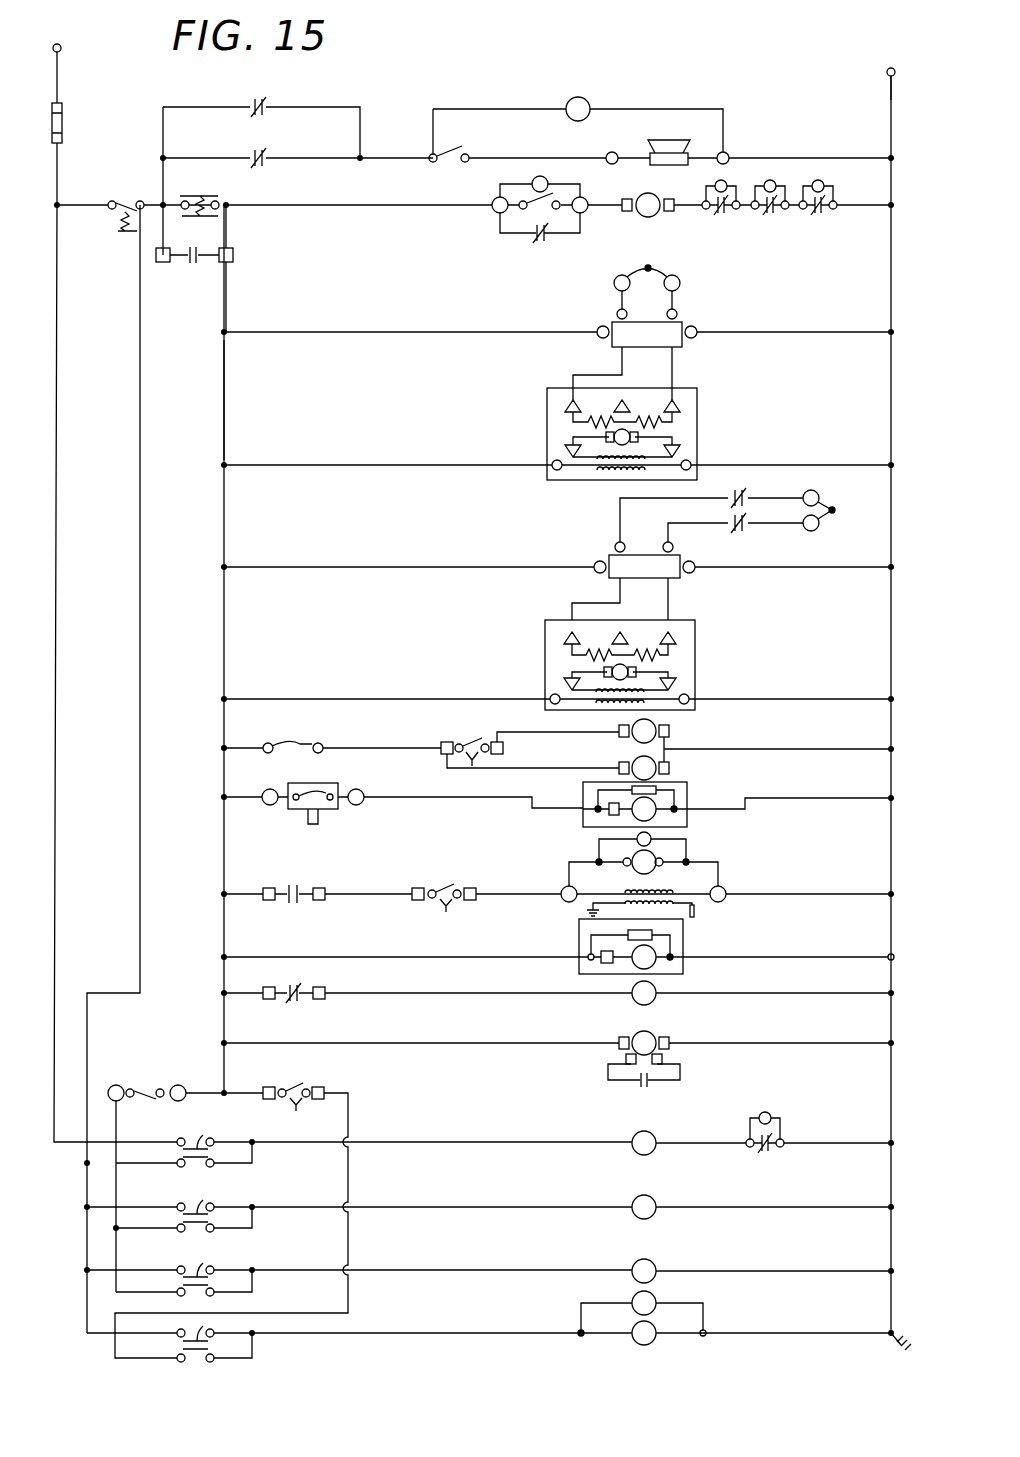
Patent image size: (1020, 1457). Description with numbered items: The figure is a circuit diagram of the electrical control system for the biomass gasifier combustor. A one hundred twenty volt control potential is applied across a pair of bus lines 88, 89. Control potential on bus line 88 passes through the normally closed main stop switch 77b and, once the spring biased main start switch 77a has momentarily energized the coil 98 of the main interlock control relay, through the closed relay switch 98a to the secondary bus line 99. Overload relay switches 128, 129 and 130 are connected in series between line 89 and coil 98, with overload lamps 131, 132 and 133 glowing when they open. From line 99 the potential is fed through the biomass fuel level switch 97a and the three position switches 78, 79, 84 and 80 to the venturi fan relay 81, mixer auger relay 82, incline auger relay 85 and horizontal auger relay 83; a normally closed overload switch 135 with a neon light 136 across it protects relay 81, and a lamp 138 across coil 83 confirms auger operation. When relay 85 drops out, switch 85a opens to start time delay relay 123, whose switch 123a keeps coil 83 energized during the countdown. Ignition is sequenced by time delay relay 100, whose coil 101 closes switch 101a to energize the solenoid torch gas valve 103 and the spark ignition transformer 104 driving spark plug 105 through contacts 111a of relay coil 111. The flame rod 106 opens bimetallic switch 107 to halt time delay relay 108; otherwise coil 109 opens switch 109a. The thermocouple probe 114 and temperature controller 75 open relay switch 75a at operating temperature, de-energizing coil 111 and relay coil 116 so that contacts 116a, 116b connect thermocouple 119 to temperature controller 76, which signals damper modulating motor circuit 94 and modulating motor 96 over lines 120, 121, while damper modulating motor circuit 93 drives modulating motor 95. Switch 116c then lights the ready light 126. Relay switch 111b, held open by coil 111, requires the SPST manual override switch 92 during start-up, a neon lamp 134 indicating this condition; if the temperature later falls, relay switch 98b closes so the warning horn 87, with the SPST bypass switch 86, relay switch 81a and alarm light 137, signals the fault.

The bus line 88 is at (60, 62).
The bus line 89 is at (887, 90).
The relay switch 81a is at (262, 96).
The relay switch 98b is at (262, 147).
The main stop switch 77b is at (125, 203).
The main start switch 77a is at (197, 195).
The relay switch 98a is at (193, 264).
The secondary bus line 99 is at (224, 407).
The SPST bypass switch 86 is at (450, 150).
The alarm light 137 is at (588, 100).
The warning horn 87 is at (668, 140).
The SPST manual override switch 92 is at (545, 200).
The neon lamp 134 is at (536, 178).
The relay switch 111b is at (538, 243).
The coil of main interlock control relay 98 is at (652, 217).
The overload relay switch 128 is at (718, 216).
The overload relay switch 129 is at (768, 216).
The overload relay switch 130 is at (818, 216).
The overload lamp 131 is at (726, 182).
The overload lamp 132 is at (775, 182).
The overload lamp 133 is at (823, 182).
The temperature controller 75 is at (672, 328).
The thermocouple probe 114 is at (644, 268).
The damper modulating motor circuit 93 is at (545, 432).
The modulating motor 95 is at (630, 437).
The temperature controller 76 is at (612, 560).
The relay contact 116a is at (738, 487).
The relay contact 116b is at (738, 534).
The thermocouple 119 is at (835, 510).
The line 120 is at (590, 603).
The line 121 is at (668, 597).
The damper modulating motor circuit 94 is at (695, 665).
The modulating motor 96 is at (612, 670).
The relay switch 75a is at (296, 745).
The relay switch 109a is at (476, 752).
The relay coil 111 is at (650, 722).
The relay coil 116 is at (636, 760).
The bimetallic switch 107 is at (310, 788).
The flame rod 106 is at (320, 815).
The time delay relay 108 is at (687, 800).
The relay coil 109 is at (652, 800).
The solenoid torch gas valve 103 is at (648, 852).
The spark ignition transformer 104 is at (625, 890).
The spark plug 105 is at (696, 911).
The relay contacts 111a is at (300, 860).
The relay switch 101a is at (447, 890).
The time delay relay 100 is at (683, 946).
The relay coil 101 is at (652, 966).
The relay switch 116c is at (298, 984).
The ready light 126 is at (634, 1000).
The time delay relay 123 is at (650, 1032).
The relay switch 85a is at (644, 1088).
The biomass fuel level switch 97a is at (150, 1090).
The relay switch 123a is at (298, 1088).
The 3-position switch 78 is at (196, 1138).
The 3-position switch 79 is at (195, 1203).
The 3-position switch 84 is at (195, 1266).
The 3-position switch 80 is at (195, 1362).
The venturi fan relay 81 is at (634, 1150).
The overload switch 135 is at (766, 1153).
The neon light 136 is at (765, 1112).
The mixer auger relay 82 is at (652, 1216).
The incline auger relay 85 is at (634, 1278).
The horizontal auger relay 83 is at (634, 1326).
The lamp 138 is at (656, 1296).